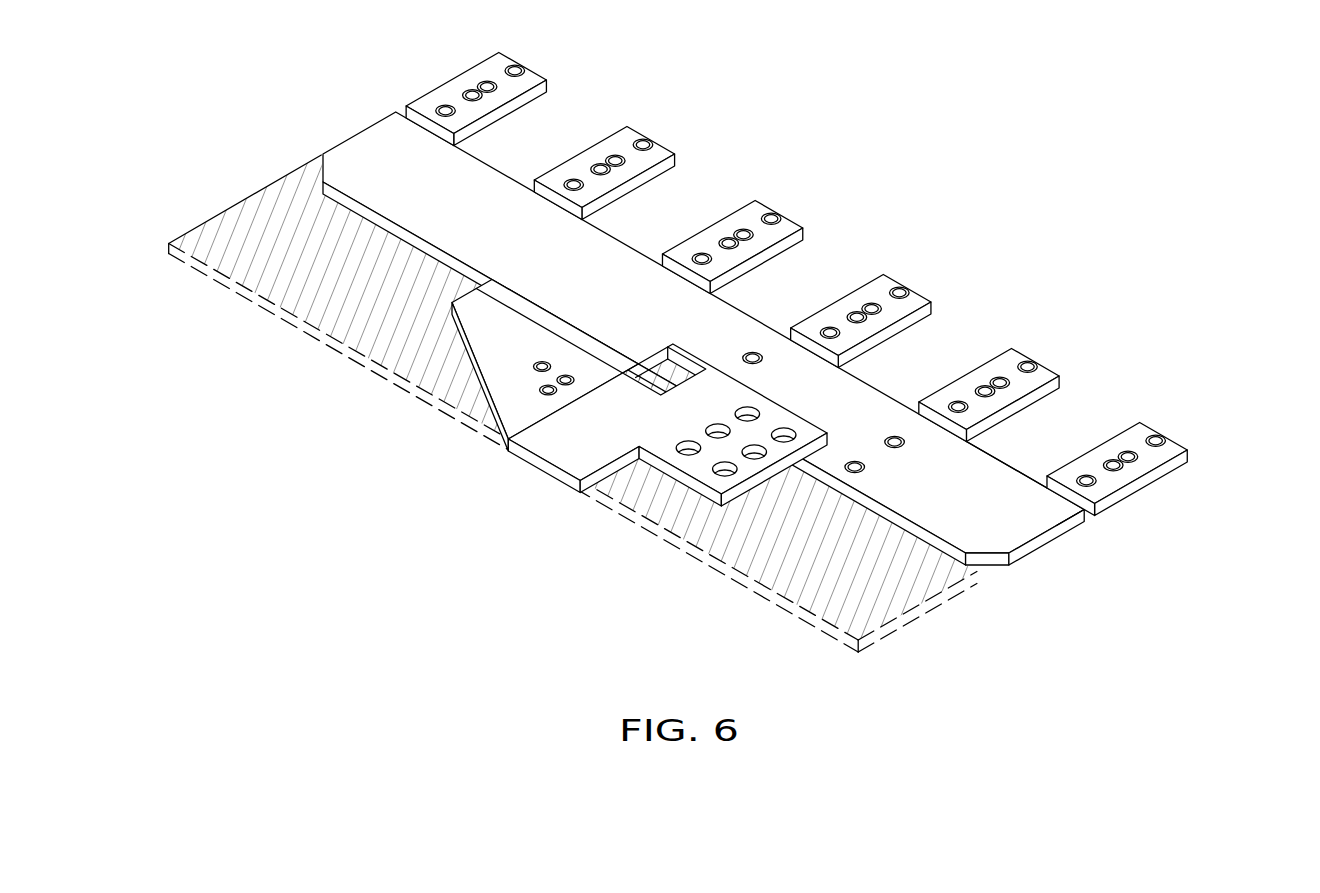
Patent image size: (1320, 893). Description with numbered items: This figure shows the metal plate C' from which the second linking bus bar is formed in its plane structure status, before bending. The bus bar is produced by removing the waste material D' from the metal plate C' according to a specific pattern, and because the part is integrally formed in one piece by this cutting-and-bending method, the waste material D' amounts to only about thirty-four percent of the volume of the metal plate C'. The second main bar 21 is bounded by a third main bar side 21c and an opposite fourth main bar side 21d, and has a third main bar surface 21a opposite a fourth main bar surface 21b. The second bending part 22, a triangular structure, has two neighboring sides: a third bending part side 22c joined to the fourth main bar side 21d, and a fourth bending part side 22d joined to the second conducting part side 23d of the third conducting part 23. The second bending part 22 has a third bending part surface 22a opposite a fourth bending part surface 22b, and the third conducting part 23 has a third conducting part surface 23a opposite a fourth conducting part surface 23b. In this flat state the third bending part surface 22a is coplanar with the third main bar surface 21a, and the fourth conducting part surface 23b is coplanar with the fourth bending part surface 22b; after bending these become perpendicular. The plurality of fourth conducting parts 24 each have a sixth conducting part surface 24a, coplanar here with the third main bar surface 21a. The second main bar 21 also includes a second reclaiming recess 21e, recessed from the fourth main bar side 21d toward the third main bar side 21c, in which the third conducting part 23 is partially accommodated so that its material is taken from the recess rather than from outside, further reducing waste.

The second main bar 21 is at (729, 403).
The third main bar surface 21a is at (1066, 535).
The fourth main bar surface 21b is at (1014, 474).
The third main bar side 21c is at (1090, 512).
The fourth main bar side 21d is at (924, 533).
The second reclaiming recess 21e is at (667, 376).
The second bending part 22 is at (439, 419).
The third bending part surface 22a is at (486, 352).
The fourth bending part surface 22b is at (512, 385).
The third bending part side 22c is at (458, 327).
The fourth bending part side 22d is at (540, 416).
The third conducting part 23 is at (665, 506).
The third conducting part surface 23a is at (665, 442).
The fourth conducting part surface 23b is at (725, 483).
The second conducting part side 23d is at (580, 475).
The fourth conducting parts 24 is at (837, 294).
The sixth conducting part surface 24a is at (1162, 470).
The metal plate C' is at (908, 134).
The waste material D' is at (573, 403).